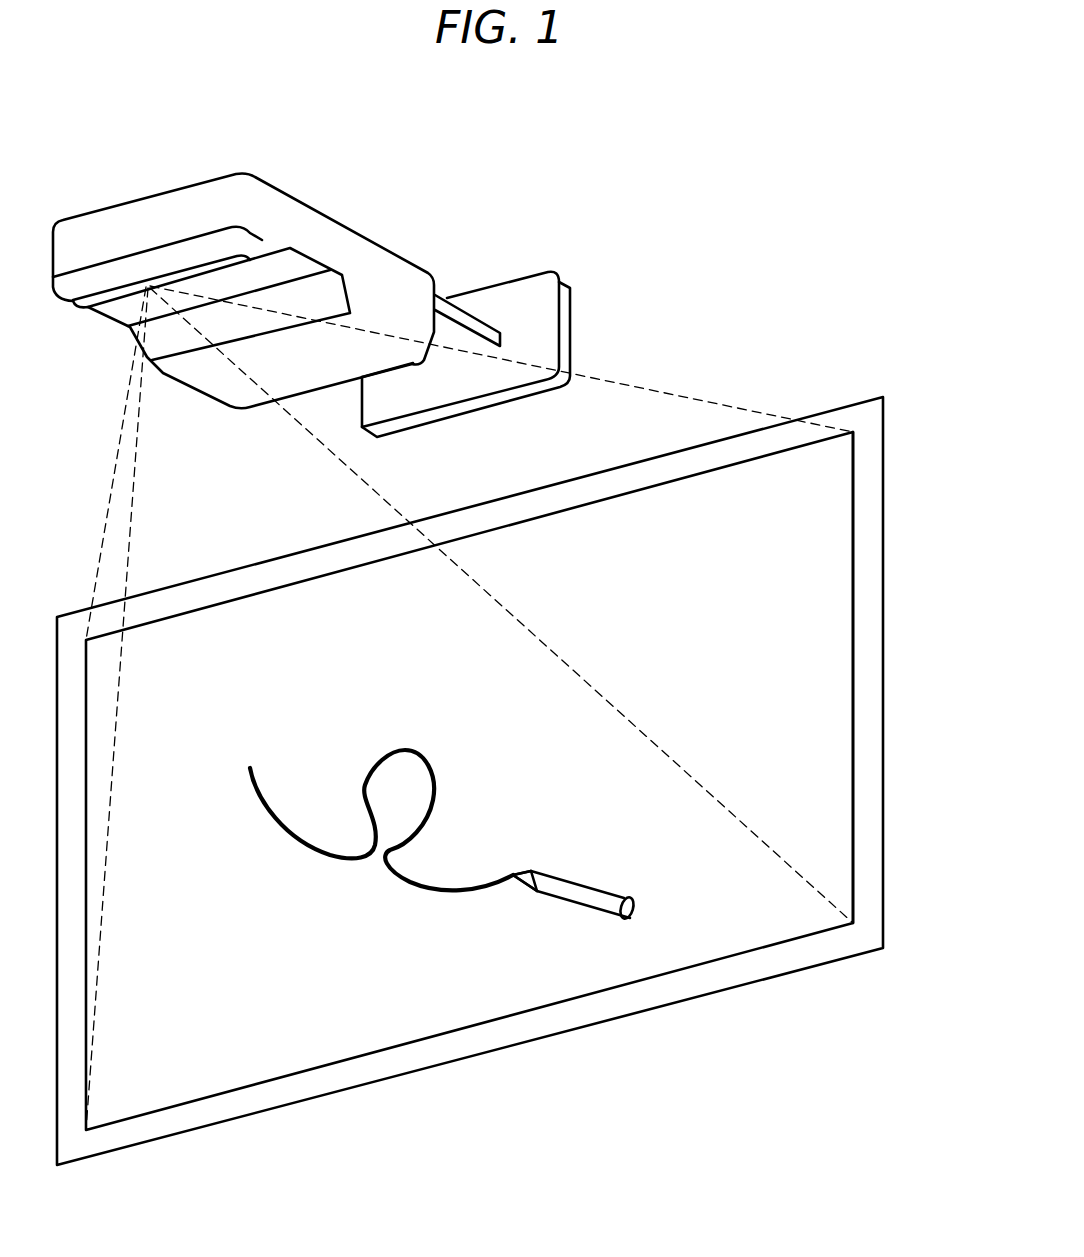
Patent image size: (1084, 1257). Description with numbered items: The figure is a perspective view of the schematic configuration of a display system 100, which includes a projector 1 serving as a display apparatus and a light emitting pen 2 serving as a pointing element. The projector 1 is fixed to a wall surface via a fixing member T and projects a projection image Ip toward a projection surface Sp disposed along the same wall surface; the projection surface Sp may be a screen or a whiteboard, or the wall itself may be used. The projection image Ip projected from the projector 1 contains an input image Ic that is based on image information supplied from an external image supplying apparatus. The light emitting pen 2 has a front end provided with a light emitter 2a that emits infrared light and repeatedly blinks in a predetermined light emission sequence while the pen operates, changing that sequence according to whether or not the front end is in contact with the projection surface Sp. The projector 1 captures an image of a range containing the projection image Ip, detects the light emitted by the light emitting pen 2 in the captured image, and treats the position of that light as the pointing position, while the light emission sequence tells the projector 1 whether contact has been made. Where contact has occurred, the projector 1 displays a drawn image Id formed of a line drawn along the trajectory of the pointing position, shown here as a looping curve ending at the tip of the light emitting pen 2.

The display system 100 is at (757, 118).
The projector 1 is at (150, 205).
The fixing member T is at (469, 305).
The projection surface Sp is at (863, 423).
The projection image Ip is at (835, 552).
The input image Ic is at (823, 668).
The drawn image Id is at (417, 753).
The light emitting pen 2 is at (610, 900).
The light emitter 2a is at (517, 873).